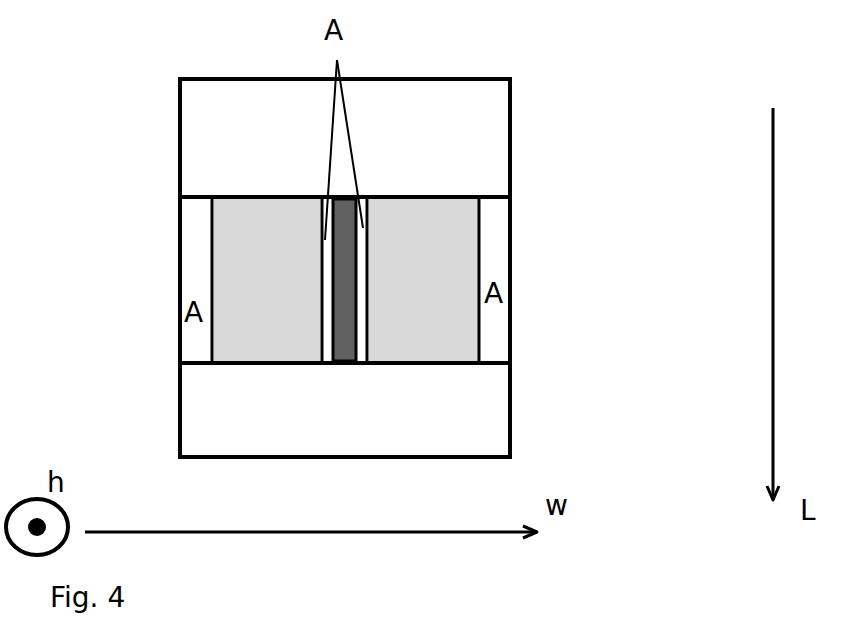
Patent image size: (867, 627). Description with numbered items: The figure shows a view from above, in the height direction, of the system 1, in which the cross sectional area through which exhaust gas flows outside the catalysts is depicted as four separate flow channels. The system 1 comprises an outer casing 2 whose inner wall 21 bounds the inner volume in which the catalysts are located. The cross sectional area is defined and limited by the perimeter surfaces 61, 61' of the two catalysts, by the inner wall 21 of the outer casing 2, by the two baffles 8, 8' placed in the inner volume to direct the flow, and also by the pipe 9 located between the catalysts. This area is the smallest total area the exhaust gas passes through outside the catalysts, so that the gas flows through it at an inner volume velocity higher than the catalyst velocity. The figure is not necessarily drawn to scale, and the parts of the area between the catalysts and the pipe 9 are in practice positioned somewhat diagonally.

The system 1 is at (624, 116).
The outer casing 2 is at (180, 339).
The inner wall 21 is at (512, 328).
The baffle 8 is at (428, 456).
The baffle 8' is at (384, 144).
The pipe 9 is at (335, 364).
The perimeter surface 61 is at (185, 280).
The perimeter surface 61' is at (538, 273).